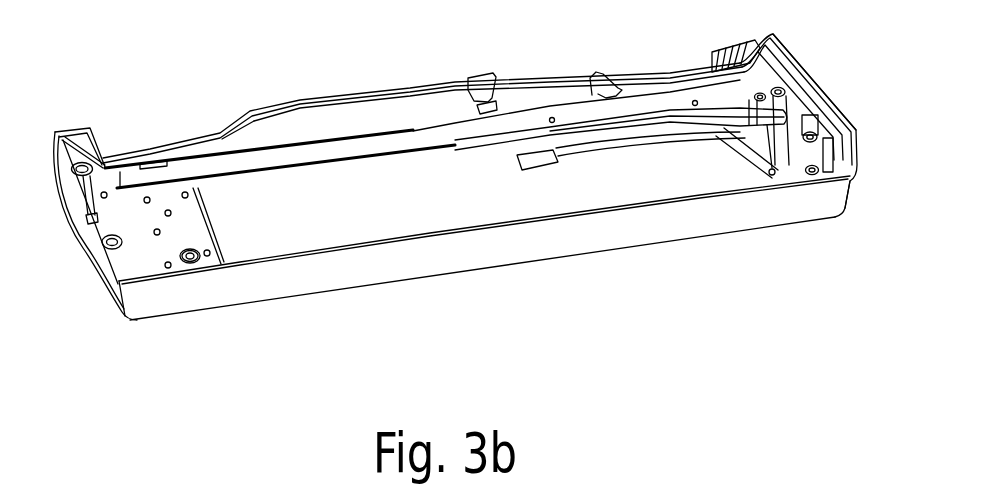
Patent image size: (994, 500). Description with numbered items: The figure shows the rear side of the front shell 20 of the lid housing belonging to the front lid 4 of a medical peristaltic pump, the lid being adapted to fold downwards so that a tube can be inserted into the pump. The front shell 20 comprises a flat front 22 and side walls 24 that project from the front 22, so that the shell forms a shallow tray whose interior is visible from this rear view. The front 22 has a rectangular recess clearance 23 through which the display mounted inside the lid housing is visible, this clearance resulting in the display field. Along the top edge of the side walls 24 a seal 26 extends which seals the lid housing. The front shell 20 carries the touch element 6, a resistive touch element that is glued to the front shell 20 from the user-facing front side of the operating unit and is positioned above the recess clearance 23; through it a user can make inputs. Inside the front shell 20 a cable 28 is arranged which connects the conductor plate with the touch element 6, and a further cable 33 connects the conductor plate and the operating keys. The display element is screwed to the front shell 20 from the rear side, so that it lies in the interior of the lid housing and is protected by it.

The front lid 4 is at (834, 73).
The touch element 6 is at (402, 222).
The front shell 20 is at (202, 330).
The flat front 22 is at (147, 241).
The rectangular recess clearance 23 is at (755, 188).
The side walls 24 is at (517, 245).
The seal 26 is at (847, 131).
The cable 28 is at (784, 155).
The further cable 33 is at (193, 175).